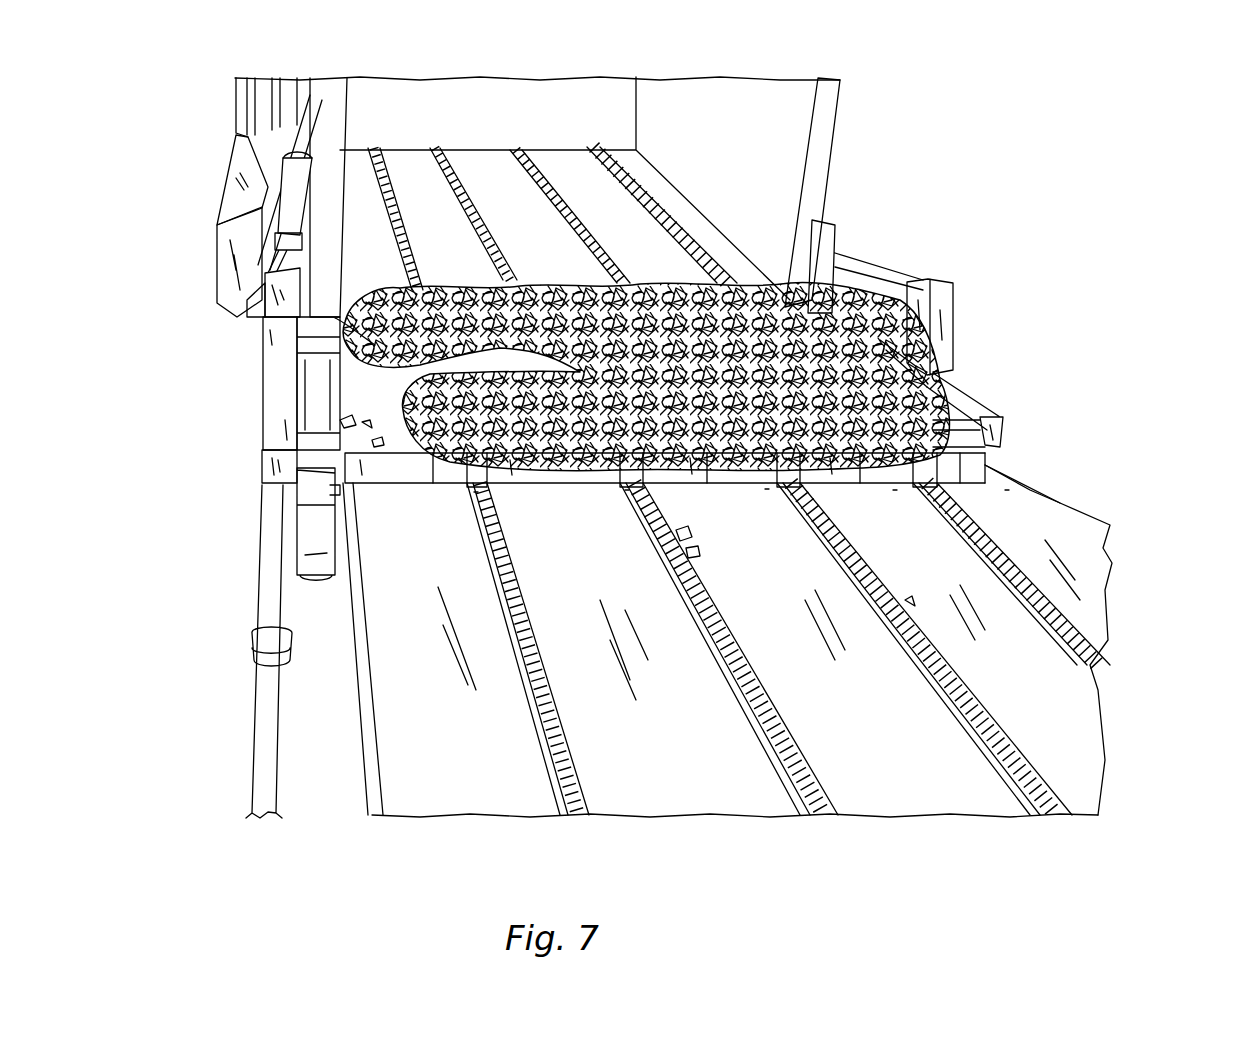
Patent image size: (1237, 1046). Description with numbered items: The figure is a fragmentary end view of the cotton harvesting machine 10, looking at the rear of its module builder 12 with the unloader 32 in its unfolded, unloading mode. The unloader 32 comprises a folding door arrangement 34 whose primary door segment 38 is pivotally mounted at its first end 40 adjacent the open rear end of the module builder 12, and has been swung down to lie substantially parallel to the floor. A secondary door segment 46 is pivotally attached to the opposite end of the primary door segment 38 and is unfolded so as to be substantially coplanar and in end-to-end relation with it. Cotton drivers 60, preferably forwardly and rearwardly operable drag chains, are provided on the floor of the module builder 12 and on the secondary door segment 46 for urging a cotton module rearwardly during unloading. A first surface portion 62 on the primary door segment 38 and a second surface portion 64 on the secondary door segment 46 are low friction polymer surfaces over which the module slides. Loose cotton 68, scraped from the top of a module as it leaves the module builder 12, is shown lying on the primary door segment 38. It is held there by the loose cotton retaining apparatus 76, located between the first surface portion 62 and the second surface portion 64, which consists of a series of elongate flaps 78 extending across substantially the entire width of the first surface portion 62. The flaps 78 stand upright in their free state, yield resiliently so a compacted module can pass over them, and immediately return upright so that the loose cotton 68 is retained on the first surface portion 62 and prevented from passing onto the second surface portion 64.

The cotton harvesting machine 10 is at (980, 142).
The module builder 12 is at (850, 97).
The unloader 32 is at (970, 333).
The folding door arrangement 34 is at (930, 327).
The primary door segment 38 is at (310, 403).
The first end 40 is at (327, 485).
The secondary door segment 46 is at (357, 693).
The cotton driver 60 is at (433, 147).
The first surface portion 62 is at (370, 397).
The second surface portion 64 is at (1093, 607).
The loose cotton 68 is at (823, 327).
The loose cotton retaining apparatus 76 is at (400, 487).
The elongate flaps 78 is at (425, 486).